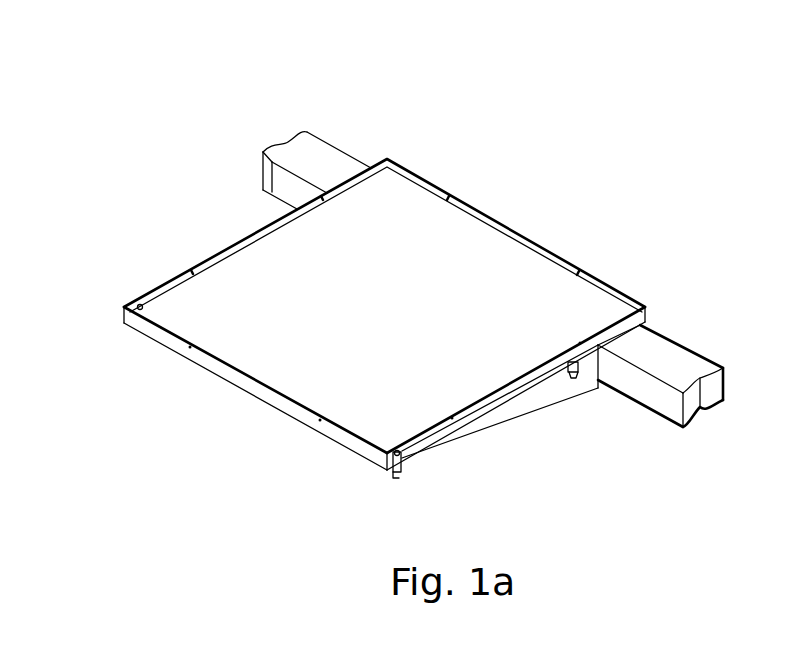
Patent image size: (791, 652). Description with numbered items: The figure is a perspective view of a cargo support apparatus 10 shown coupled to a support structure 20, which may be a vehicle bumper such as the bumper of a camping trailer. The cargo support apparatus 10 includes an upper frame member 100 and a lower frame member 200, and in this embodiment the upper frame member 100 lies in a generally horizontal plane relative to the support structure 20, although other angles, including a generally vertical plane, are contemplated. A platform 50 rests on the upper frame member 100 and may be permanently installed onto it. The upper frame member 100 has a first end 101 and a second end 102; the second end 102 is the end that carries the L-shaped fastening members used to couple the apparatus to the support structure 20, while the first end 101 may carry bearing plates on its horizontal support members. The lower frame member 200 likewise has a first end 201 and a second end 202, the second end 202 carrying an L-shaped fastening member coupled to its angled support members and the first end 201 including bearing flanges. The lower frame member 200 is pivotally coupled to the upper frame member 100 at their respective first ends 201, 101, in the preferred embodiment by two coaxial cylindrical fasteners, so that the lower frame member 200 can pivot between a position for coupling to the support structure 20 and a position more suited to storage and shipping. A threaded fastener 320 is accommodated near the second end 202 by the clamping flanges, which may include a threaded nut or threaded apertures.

The cargo support apparatus 10 is at (630, 170).
The support structure 20 is at (367, 140).
The platform 50 is at (267, 258).
The upper frame member 100 is at (607, 240).
The first end 101 is at (263, 397).
The second end 102 is at (627, 293).
The lower frame member 200 is at (500, 464).
The first end 201 is at (397, 473).
The second end 202 is at (622, 393).
The threaded fastener 320 is at (573, 378).